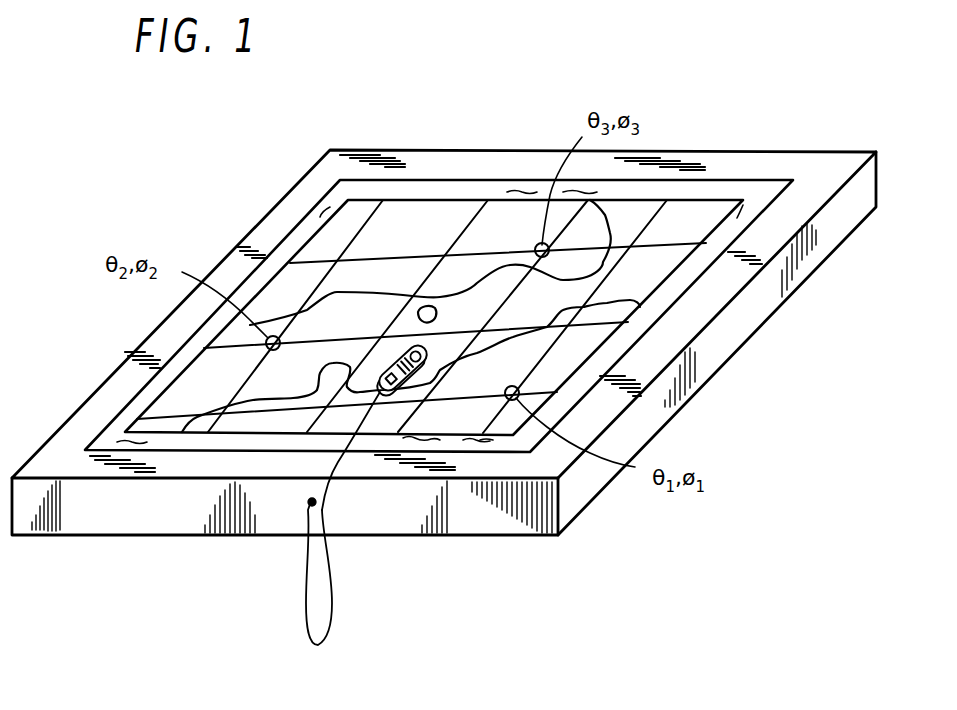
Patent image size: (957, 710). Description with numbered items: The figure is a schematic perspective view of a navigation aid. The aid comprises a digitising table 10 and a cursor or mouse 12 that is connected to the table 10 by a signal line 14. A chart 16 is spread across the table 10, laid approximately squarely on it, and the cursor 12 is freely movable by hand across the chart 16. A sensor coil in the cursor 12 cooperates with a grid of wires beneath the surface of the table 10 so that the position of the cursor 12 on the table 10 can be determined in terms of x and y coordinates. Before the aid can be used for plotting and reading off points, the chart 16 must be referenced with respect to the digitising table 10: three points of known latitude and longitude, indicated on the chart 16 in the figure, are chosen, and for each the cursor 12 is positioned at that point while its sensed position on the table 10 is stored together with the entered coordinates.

The digitising table 10 is at (577, 507).
The cursor 12 is at (422, 388).
The signal line 14 is at (332, 618).
The chart 16 is at (647, 317).